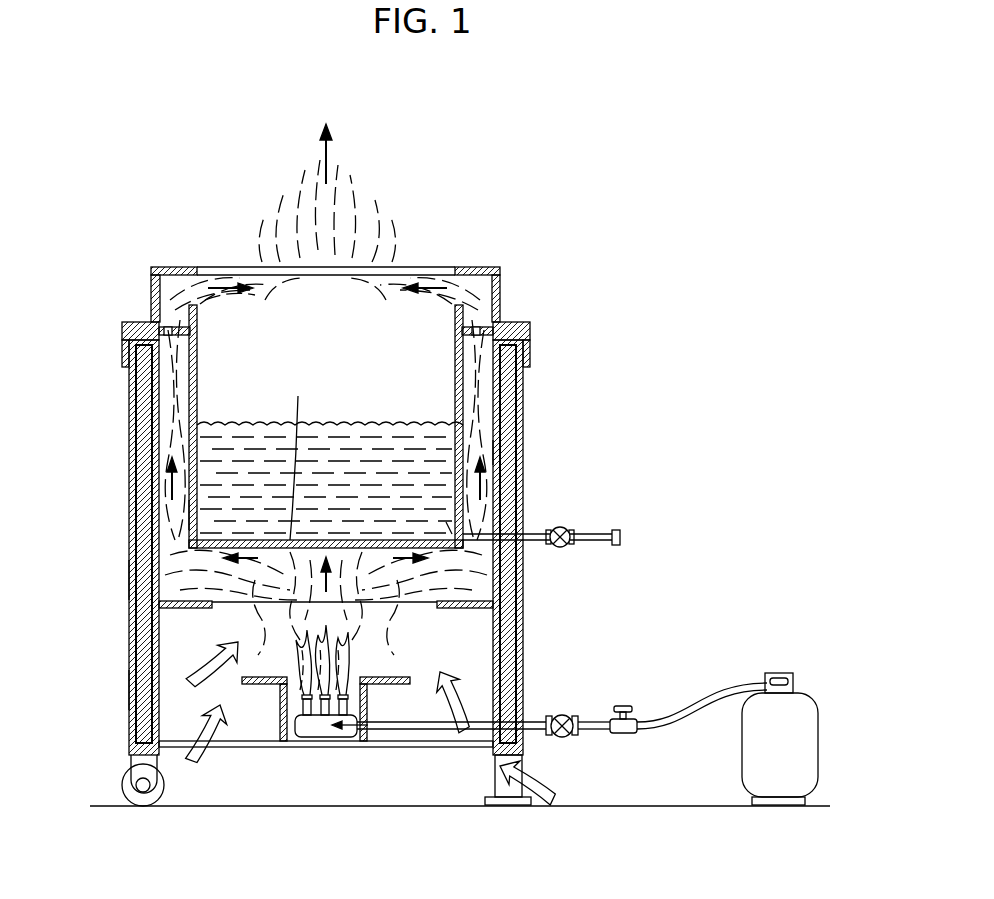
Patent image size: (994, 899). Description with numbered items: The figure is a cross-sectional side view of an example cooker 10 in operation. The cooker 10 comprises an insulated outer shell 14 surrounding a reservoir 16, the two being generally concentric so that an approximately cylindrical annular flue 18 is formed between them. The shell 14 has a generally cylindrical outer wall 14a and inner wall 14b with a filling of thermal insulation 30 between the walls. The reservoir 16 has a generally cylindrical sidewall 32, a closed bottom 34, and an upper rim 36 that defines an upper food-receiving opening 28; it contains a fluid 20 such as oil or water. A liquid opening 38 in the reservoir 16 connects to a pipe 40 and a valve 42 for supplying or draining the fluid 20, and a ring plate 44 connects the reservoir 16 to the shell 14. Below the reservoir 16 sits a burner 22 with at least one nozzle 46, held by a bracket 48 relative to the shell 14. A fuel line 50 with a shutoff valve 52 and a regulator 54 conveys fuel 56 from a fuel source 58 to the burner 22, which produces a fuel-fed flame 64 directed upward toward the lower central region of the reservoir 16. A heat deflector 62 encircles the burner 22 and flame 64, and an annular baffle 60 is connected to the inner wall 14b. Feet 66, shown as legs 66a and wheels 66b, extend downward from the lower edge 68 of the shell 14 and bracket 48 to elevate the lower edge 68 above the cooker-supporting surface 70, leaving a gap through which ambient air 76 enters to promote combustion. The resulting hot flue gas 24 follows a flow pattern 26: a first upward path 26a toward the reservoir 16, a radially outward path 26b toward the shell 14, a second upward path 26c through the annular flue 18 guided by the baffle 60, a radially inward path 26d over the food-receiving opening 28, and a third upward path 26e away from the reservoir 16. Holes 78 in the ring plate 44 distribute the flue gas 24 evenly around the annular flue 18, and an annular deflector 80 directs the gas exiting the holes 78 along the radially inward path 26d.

The cooker 10 is at (612, 212).
The insulated outer shell 14 is at (143, 441).
The outer wall 14a is at (129, 581).
The inner wall 14b is at (150, 690).
The reservoir 16 is at (198, 392).
The annular flue 18 is at (508, 453).
The fluid 20 is at (372, 424).
The burner 22 is at (334, 740).
The hot flue gas 24 is at (372, 232).
The flow pattern 26 is at (432, 283).
The first upward path 26a is at (327, 552).
The radially outward path 26b is at (252, 552).
The second upward path 26c is at (168, 485).
The radially inward path 26d is at (222, 283).
The third upward path 26e is at (323, 157).
The upper food-receiving opening 28 is at (320, 318).
The thermal insulation 30 is at (146, 655).
The sidewall 32 is at (186, 513).
The closed bottom 34 is at (300, 456).
The upper rim 36 is at (446, 310).
The liquid opening 38 is at (448, 524).
The pipe 40 is at (532, 532).
The valve 42 is at (566, 528).
The ring plate 44 is at (528, 331).
The nozzle 46 is at (348, 698).
The bracket 48 is at (398, 752).
The fuel line 50 is at (528, 720).
The shutoff valve 52 is at (565, 714).
The regulator 54 is at (628, 708).
The fuel 56 is at (340, 740).
The fuel source 58 is at (742, 745).
The annular baffle 60 is at (168, 610).
The heat deflector 62 is at (254, 686).
The fuel-fed flame 64 is at (360, 662).
The feet 66 is at (172, 700).
The legs 66a is at (494, 784).
The wheels 66b is at (166, 797).
The lower edge 68 is at (128, 772).
The cooker-supporting surface 70 is at (626, 805).
The ambient air 76 is at (470, 700).
The holes 78 is at (170, 326).
The annular deflector 80 is at (178, 268).